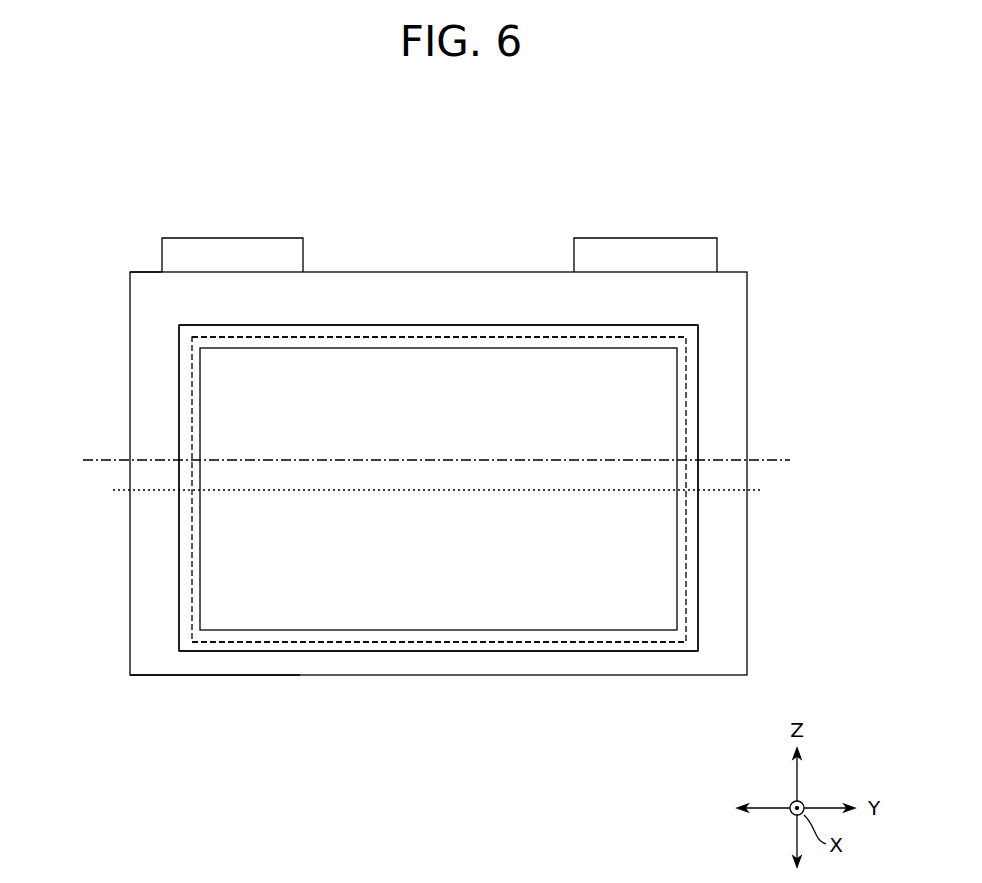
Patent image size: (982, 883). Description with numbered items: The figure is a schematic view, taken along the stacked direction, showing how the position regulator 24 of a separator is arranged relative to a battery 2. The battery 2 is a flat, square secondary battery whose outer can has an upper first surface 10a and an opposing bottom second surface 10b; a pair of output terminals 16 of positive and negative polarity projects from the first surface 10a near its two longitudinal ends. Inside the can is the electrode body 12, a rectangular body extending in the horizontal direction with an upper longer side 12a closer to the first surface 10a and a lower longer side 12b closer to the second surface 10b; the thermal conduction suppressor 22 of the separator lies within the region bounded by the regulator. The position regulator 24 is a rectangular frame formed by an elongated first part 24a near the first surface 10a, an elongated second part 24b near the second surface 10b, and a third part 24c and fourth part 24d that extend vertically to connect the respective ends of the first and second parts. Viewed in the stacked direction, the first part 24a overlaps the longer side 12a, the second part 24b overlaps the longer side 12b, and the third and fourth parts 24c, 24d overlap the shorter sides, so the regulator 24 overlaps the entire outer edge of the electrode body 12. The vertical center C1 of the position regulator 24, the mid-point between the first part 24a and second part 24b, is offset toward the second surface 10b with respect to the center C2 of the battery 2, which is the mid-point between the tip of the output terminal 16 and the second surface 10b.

The battery 2 is at (128, 600).
The first surface 10a is at (143, 271).
The second surface 10b is at (161, 676).
The output terminal 16 is at (234, 237).
The electrode body 12 is at (690, 577).
The longer side of electrode body 12a is at (668, 330).
The longer side of electrode body 12b is at (583, 645).
The thermal conduction suppressor 22 is at (650, 605).
The position regulator 24 is at (699, 390).
The first part 24a is at (453, 324).
The second part 24b is at (445, 653).
The third part 24c is at (178, 514).
The fourth part 24d is at (699, 540).
The center of position regulator C1 is at (453, 490).
The center of battery C2 is at (453, 460).